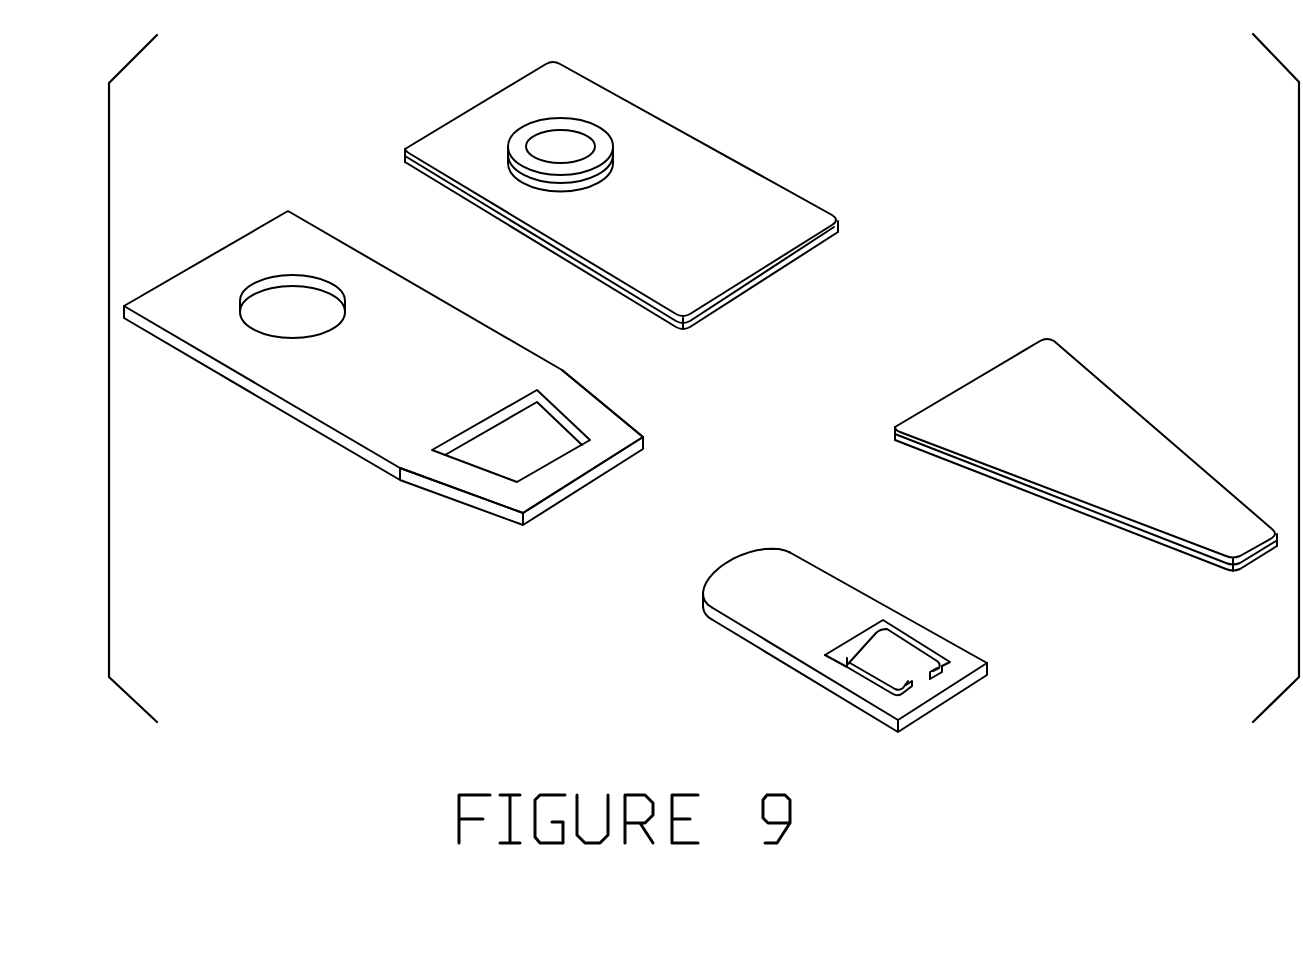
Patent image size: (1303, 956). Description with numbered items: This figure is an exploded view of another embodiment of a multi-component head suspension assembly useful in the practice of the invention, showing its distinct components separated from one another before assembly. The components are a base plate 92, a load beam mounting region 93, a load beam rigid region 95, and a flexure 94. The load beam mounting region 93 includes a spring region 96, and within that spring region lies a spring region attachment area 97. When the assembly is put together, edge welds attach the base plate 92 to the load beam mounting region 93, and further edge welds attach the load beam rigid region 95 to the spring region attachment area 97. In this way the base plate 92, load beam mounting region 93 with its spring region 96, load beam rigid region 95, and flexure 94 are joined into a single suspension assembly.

The base plate 92 is at (723, 150).
The load beam mounting region 93 is at (404, 347).
The flexure 94 is at (855, 585).
The load beam rigid region 95 is at (1117, 390).
The spring region 96 is at (603, 405).
The spring region attachment area 97 is at (598, 458).